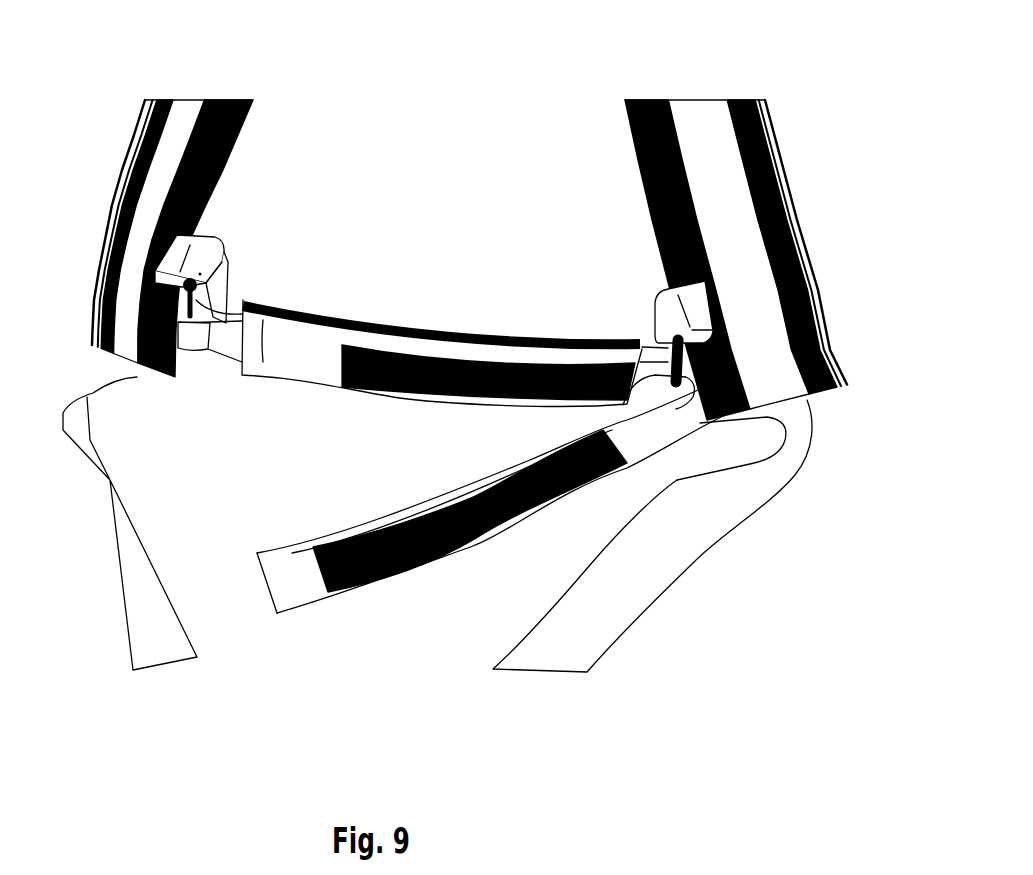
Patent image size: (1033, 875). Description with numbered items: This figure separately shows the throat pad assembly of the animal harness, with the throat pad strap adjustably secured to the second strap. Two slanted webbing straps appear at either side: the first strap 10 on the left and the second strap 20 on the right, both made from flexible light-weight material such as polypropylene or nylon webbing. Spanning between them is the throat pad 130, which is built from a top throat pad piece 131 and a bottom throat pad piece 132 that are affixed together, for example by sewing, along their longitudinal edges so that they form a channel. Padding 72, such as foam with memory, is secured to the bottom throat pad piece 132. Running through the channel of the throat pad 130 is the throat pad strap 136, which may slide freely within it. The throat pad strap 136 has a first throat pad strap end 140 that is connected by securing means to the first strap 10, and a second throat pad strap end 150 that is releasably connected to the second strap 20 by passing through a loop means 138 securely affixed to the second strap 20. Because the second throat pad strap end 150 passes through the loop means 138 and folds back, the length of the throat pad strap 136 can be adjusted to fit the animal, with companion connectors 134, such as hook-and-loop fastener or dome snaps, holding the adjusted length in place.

The first strap 10 is at (122, 184).
The second strap 20 is at (783, 175).
The padding 72 is at (580, 337).
The throat pad 130 is at (438, 312).
The top throat pad piece 131 is at (298, 370).
The bottom throat pad piece 132 is at (318, 296).
The companion connectors 134 is at (497, 471).
The throat pad strap 136 is at (650, 441).
The loop means 138 is at (827, 348).
The first throat pad strap end 140 is at (192, 342).
The second throat pad strap end 150 is at (298, 596).